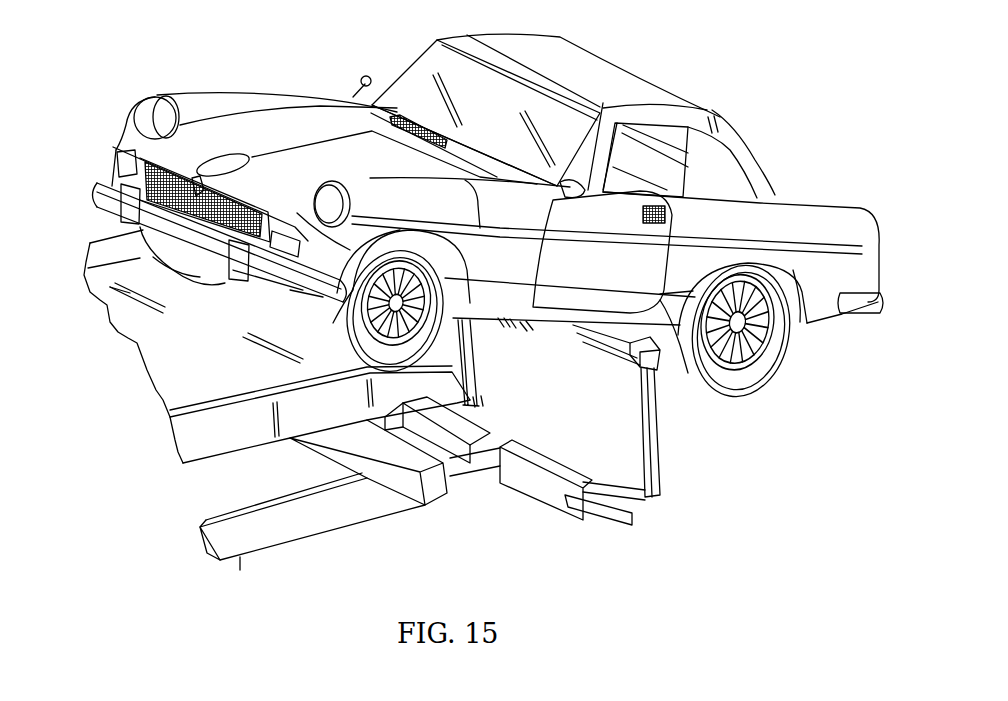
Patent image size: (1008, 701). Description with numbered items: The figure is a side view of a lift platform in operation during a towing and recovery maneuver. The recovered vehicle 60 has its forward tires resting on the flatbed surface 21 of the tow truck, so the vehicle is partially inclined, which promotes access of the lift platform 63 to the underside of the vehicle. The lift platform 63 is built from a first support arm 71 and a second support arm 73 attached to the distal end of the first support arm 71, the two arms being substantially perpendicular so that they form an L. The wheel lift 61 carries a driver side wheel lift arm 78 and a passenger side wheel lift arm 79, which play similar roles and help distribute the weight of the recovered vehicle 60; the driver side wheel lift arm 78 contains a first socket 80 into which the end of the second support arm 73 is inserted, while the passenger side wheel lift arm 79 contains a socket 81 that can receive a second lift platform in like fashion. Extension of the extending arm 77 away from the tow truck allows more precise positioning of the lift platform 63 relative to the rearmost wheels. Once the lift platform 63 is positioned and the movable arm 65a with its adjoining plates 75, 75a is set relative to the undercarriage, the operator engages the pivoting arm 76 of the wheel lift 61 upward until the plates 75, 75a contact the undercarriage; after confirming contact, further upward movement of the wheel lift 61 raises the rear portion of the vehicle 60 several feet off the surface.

The recovered vehicle 60 is at (303, 98).
The flatbed surface 21 is at (135, 344).
The wheel lift 61 is at (381, 535).
The lift platform 63 is at (599, 456).
The movable arm 65a is at (505, 322).
The first support arm 71 is at (478, 345).
The second support arm 73 is at (580, 523).
The plate 75 is at (582, 334).
The plate 75a is at (523, 325).
The pivoting arm 76 is at (330, 517).
The extending arm 77 is at (473, 473).
The driver side wheel lift arm 78 is at (597, 523).
The passenger side wheel lift arm 79 is at (458, 424).
The first socket 80 is at (627, 488).
The socket 81 is at (476, 400).